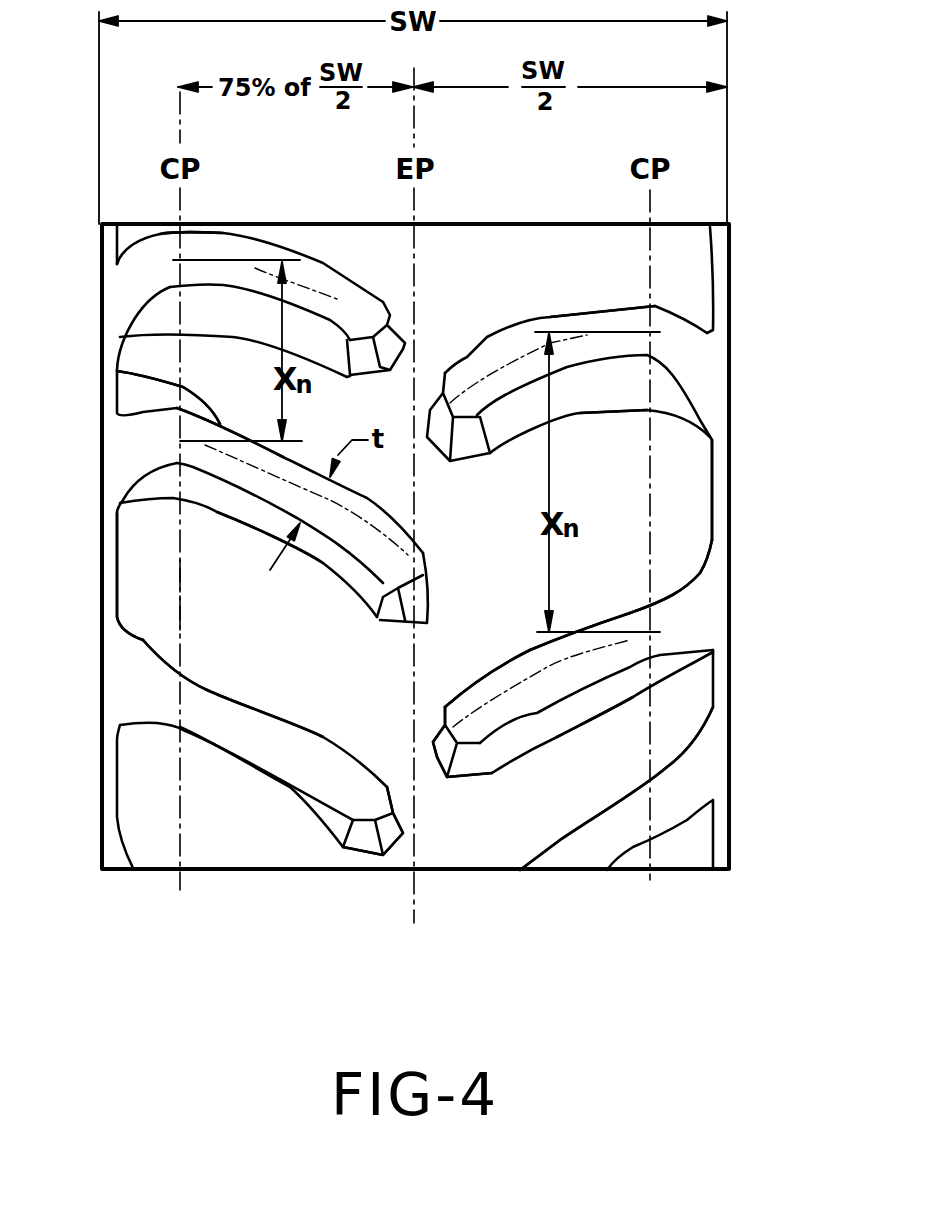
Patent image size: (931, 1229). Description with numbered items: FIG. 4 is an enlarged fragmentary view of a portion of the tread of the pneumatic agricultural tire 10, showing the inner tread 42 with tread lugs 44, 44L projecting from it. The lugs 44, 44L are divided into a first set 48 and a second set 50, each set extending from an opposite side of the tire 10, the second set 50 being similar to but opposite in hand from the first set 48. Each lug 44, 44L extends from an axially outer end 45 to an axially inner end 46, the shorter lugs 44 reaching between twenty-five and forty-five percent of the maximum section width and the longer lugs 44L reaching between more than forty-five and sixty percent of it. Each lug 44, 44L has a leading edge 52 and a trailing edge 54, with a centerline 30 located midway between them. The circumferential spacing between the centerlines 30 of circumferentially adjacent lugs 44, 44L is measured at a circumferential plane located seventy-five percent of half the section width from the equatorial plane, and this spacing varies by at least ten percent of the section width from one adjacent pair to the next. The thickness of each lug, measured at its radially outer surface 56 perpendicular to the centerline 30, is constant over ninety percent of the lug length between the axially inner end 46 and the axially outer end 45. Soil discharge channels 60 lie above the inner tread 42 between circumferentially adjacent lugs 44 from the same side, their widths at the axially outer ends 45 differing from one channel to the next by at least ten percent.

The pneumatic agricultural tire 10 is at (760, 385).
The centerline 30 is at (337, 299).
The inner tread 42 is at (200, 623).
The tread lug 44 is at (163, 267).
The long tread lug 44L is at (190, 456).
The axially outer end 45 is at (137, 685).
The axially inner end 46 is at (432, 740).
The first set of lugs 48 is at (240, 770).
The second set of lugs 50 is at (624, 871).
The leading edge 52 is at (230, 490).
The trailing edge 54 is at (117, 371).
The radially outer surface 56 is at (467, 703).
The soil discharge channel 60 is at (158, 593).